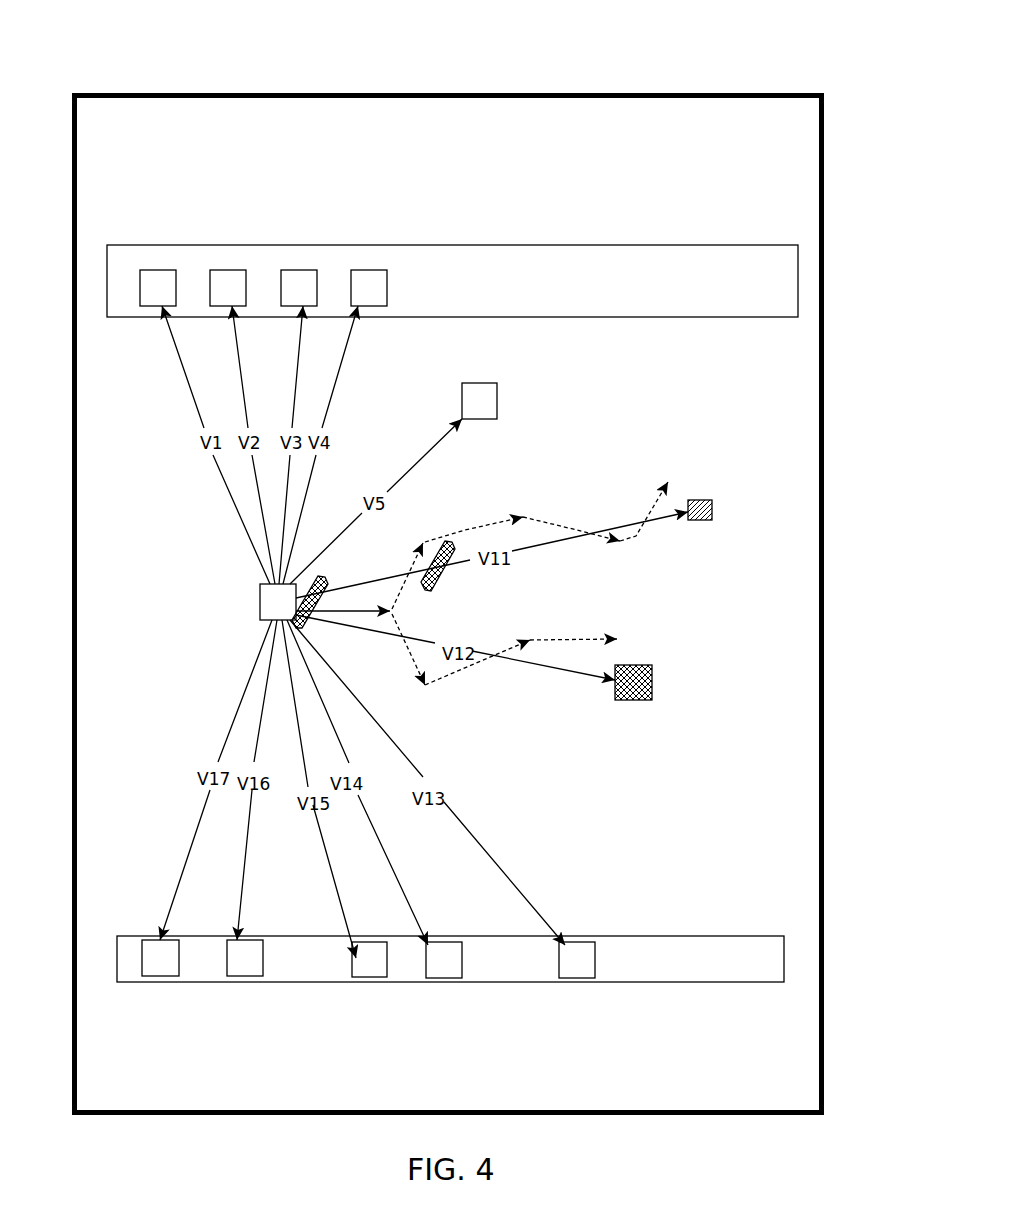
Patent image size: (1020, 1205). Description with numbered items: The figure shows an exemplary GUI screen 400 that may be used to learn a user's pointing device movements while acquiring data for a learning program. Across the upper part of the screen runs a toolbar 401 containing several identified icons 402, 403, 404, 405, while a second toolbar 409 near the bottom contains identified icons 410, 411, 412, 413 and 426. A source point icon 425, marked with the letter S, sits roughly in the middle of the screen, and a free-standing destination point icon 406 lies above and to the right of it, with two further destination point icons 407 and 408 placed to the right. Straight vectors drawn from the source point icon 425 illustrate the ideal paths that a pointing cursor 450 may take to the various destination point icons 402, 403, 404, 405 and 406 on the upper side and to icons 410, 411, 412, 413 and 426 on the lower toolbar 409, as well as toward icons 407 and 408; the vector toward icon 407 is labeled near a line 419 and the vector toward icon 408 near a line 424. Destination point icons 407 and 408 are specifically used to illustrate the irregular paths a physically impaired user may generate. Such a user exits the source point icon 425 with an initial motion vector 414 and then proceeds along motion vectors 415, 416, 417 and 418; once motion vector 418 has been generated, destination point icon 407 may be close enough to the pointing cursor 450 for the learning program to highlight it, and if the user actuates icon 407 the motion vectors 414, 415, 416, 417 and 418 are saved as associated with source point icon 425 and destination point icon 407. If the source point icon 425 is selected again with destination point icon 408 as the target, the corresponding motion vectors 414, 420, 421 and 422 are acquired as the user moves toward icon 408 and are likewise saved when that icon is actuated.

The GUI screen 400 is at (727, 58).
The toolbar 401 is at (625, 245).
The identified icon 402 is at (157, 270).
The identified icon 403 is at (229, 270).
The identified icon 404 is at (287, 270).
The identified icon 405 is at (362, 270).
The destination point icon 406 is at (497, 400).
The destination point icon 407 is at (690, 500).
The destination point icon 408 is at (651, 665).
The toolbar 409 is at (663, 983).
The identified icon 410 is at (155, 977).
The identified icon 411 is at (248, 977).
The identified icon 412 is at (365, 977).
The identified icon 413 is at (440, 978).
The initial motion vector 414 is at (352, 614).
The motion vector 415 is at (410, 575).
The motion vector 416 is at (470, 526).
The motion vector 417 is at (577, 528).
The motion vector 418 is at (657, 520).
The vector V11 line 419 is at (527, 553).
The motion vector 420 is at (407, 667).
The motion vector 421 is at (465, 668).
The motion vector 422 is at (578, 637).
The vector V12 line 424 is at (552, 668).
The source point icon 425 is at (260, 590).
The identified icon 426 is at (578, 983).
The pointing cursor 450 is at (313, 577).